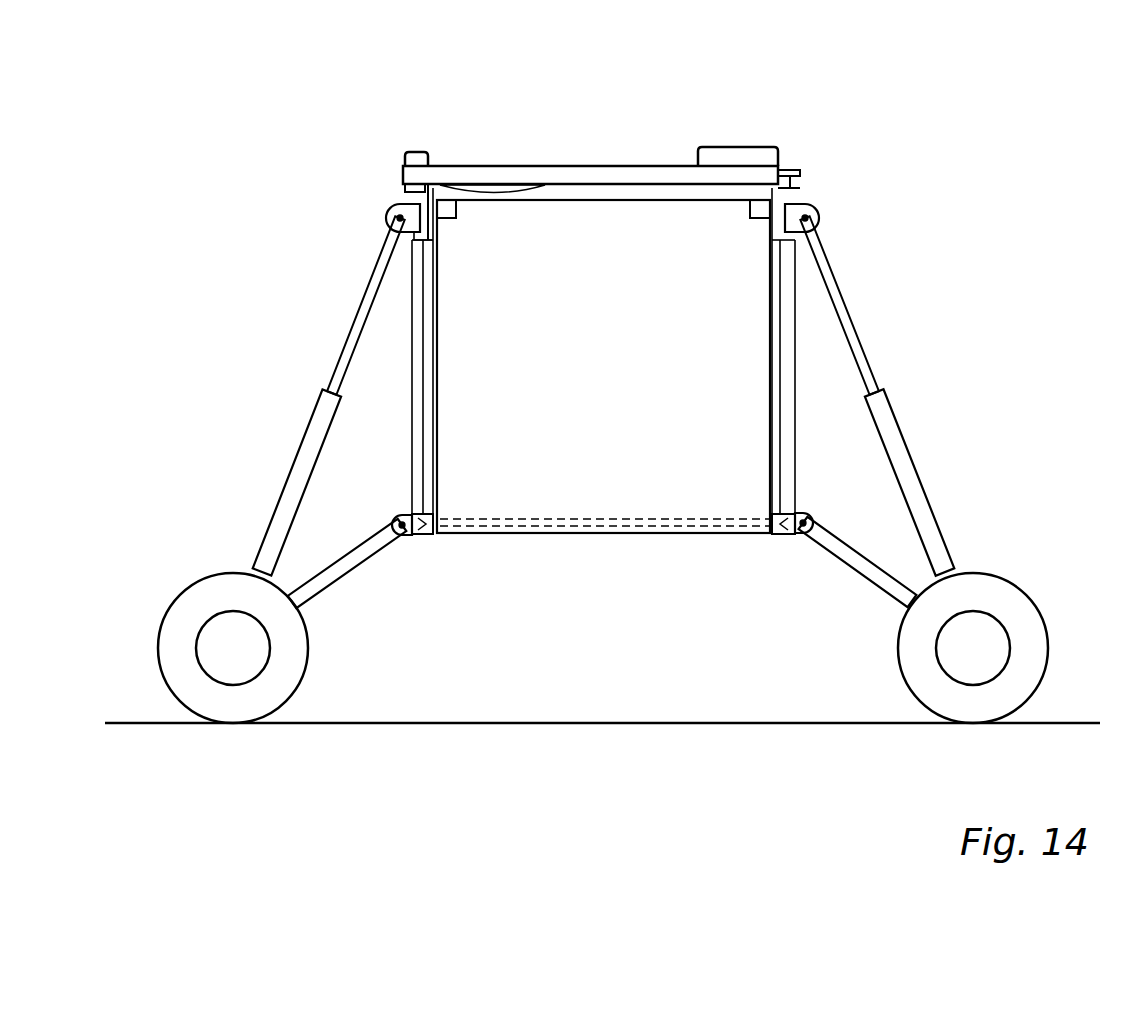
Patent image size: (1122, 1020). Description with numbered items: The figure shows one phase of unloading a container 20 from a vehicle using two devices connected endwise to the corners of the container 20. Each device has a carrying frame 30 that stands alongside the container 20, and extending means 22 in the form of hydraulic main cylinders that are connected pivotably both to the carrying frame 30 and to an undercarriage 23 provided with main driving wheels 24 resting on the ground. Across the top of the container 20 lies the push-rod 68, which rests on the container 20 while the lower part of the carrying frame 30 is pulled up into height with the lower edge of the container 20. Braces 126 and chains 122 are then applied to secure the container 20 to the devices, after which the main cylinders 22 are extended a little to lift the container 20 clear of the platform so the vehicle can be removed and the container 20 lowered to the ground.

The container 20 is at (620, 370).
The extending means 22 is at (300, 472).
The undercarriage 23 is at (365, 557).
The main driving wheels 24 is at (188, 606).
The carrying frame 30 is at (420, 444).
The push-rod 68 is at (596, 166).
The chains 122 is at (430, 262).
The braces 126 is at (435, 527).